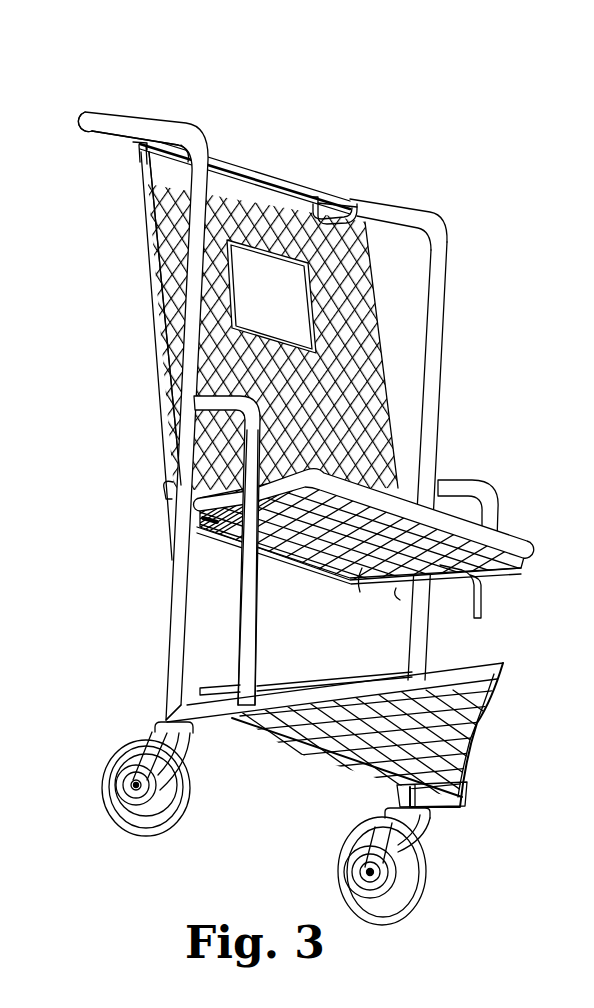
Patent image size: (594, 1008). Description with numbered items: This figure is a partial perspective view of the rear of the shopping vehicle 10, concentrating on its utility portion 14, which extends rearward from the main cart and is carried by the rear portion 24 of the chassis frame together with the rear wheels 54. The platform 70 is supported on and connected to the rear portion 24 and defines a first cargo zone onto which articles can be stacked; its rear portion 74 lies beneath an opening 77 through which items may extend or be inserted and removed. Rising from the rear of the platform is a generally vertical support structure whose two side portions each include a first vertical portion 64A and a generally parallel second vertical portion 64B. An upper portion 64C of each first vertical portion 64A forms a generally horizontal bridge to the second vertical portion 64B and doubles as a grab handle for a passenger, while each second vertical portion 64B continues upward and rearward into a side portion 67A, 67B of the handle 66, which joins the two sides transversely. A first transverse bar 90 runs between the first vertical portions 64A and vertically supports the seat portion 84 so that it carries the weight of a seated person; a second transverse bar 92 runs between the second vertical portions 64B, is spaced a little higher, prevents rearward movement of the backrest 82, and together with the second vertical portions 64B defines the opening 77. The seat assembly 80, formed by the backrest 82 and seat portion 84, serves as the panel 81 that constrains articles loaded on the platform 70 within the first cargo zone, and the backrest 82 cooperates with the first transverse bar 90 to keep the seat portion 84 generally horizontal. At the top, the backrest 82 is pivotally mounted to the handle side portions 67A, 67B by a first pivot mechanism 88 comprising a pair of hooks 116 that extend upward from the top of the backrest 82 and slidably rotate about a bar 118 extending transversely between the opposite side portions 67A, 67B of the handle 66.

The shopping vehicle 10 is at (503, 186).
The utility portion 14 is at (158, 688).
The rear portion of frame 24 is at (297, 712).
The rear wheels 54 is at (137, 828).
The first vertical portion 64A is at (250, 646).
The second vertical portion 64B is at (180, 341).
The upper portion (bridge) 64C is at (450, 481).
The handle 66 is at (92, 112).
The side portion of handle 67A is at (408, 208).
The side portion of handle 67B is at (158, 129).
The platform 70 is at (342, 780).
The rear portion of platform 74 is at (205, 686).
The opening 77 is at (297, 614).
The seat assembly 80 is at (168, 394).
The panel 81 is at (172, 437).
The backrest 82 is at (160, 256).
The seat portion 84 is at (514, 543).
The first pivot mechanism 88 is at (342, 183).
The first transverse bar 90 is at (365, 553).
The second transverse bar 92 is at (163, 483).
The hooks 116 is at (357, 199).
The bar 118 is at (268, 171).